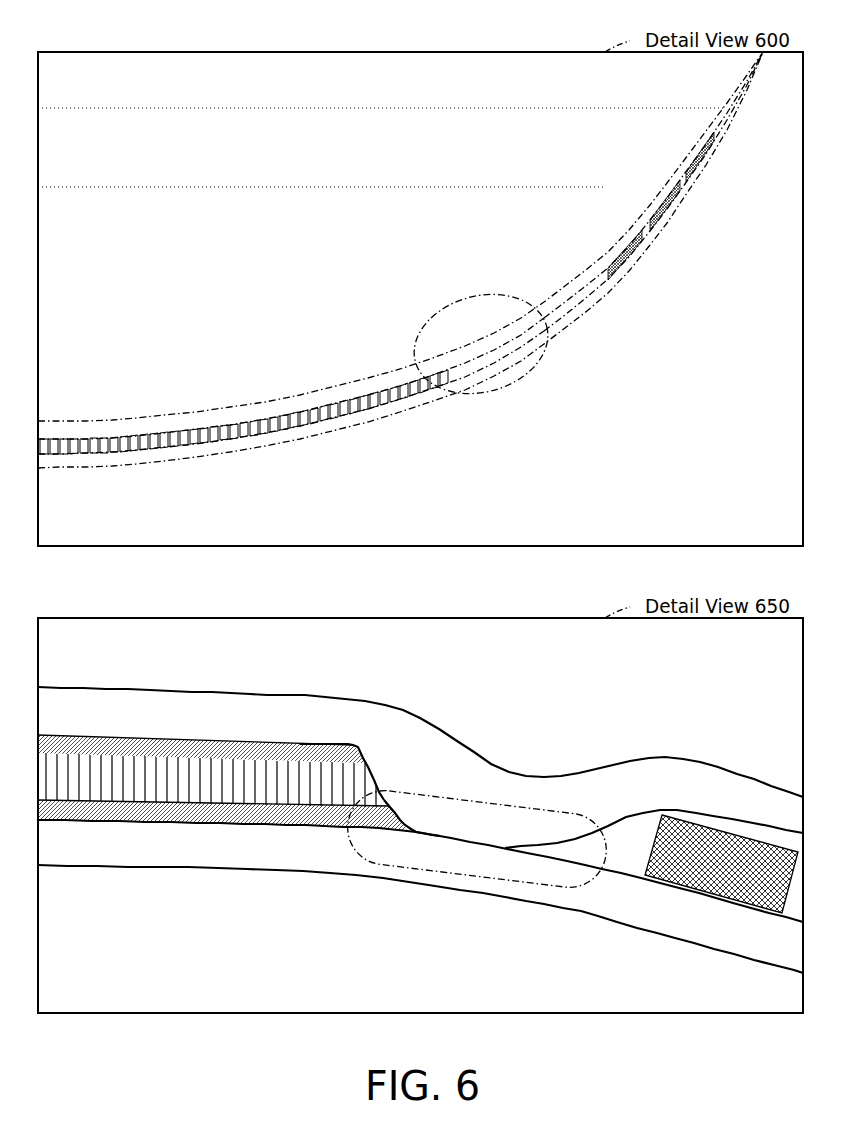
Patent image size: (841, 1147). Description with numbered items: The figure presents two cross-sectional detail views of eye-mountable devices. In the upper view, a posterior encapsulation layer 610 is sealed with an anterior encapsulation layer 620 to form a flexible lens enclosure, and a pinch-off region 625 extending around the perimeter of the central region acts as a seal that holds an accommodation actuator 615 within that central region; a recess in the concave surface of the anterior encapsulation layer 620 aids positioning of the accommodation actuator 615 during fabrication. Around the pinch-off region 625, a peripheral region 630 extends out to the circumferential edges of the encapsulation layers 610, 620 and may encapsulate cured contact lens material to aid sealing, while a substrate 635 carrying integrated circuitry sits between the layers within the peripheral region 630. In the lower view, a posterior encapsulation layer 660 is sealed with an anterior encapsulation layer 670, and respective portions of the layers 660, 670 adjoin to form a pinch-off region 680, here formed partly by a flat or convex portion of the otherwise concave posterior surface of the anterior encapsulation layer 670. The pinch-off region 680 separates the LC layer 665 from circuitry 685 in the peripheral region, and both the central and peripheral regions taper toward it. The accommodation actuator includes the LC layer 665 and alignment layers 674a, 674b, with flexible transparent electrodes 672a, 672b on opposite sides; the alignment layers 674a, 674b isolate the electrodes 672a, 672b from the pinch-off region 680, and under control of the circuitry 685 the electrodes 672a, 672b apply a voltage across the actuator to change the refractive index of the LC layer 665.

The posterior encapsulation layer 610 is at (136, 416).
The accommodation actuator 615 is at (237, 426).
The anterior encapsulation layer 620 is at (302, 443).
The pinch-off region 625 is at (476, 298).
The peripheral region 630 is at (590, 262).
The substrate 635 is at (690, 184).
The posterior encapsulation layer 660 is at (420, 896).
The LC layer 665 is at (222, 783).
The anterior encapsulation layer 670 is at (420, 767).
The transparent electrode 672a is at (130, 726).
The transparent electrode 672b is at (130, 831).
The alignment layer 674a is at (326, 749).
The alignment layer 674b is at (325, 822).
The pinch-off region 680 is at (480, 886).
The circuitry 685 is at (721, 864).